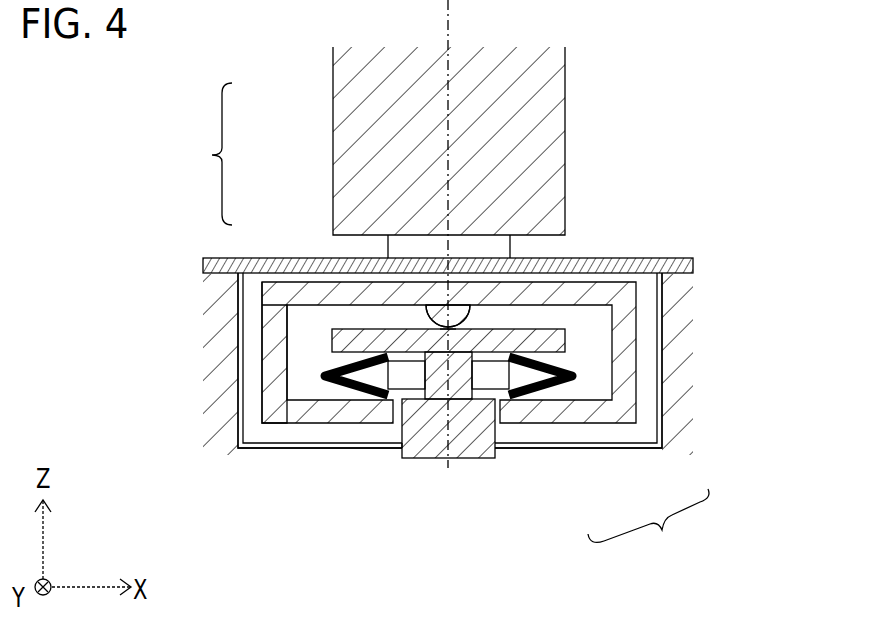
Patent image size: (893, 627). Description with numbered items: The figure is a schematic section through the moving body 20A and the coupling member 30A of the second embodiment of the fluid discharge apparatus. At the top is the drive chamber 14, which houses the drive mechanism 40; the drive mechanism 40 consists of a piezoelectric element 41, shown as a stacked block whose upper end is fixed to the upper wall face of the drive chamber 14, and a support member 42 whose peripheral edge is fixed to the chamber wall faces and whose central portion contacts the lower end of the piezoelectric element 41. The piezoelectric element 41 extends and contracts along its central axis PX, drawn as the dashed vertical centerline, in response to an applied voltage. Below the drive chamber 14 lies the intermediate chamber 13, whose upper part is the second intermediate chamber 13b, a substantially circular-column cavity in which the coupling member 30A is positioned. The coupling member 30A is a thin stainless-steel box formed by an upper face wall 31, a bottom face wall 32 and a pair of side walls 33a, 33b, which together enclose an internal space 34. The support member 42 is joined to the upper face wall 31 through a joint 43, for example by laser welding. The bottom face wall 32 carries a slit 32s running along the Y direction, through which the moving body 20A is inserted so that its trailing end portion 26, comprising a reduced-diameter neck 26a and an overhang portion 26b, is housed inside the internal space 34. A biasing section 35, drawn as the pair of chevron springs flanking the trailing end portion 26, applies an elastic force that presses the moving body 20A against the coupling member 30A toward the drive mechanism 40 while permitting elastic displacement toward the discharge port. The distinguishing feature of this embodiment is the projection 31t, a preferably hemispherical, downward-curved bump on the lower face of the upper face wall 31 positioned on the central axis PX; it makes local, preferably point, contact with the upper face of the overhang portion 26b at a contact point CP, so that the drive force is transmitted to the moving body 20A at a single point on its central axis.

The drive chamber 14 is at (283, 52).
The central axis of the piezoelectric element PX is at (449, 36).
The drive mechanism 40 is at (205, 154).
The piezoelectric element 41 is at (337, 125).
The support member 42 is at (307, 258).
The joint 43 is at (465, 312).
The second intermediate chamber 13b is at (244, 312).
The intermediate chamber 13 is at (448, 364).
The upper face wall 31 is at (578, 295).
The projection 31t is at (455, 327).
The coupling member 30A is at (645, 312).
The bottom face wall 32 is at (300, 445).
The slit 32s is at (397, 450).
The side wall 33a is at (273, 367).
The side wall 33b is at (627, 352).
The internal space 34 is at (320, 344).
The biasing section 35 is at (583, 373).
The contact point CP is at (457, 330).
The trailing end portion 26 is at (648, 529).
The neck 26a is at (483, 382).
The overhang portion 26b is at (513, 397).
The moving body 20A is at (417, 480).